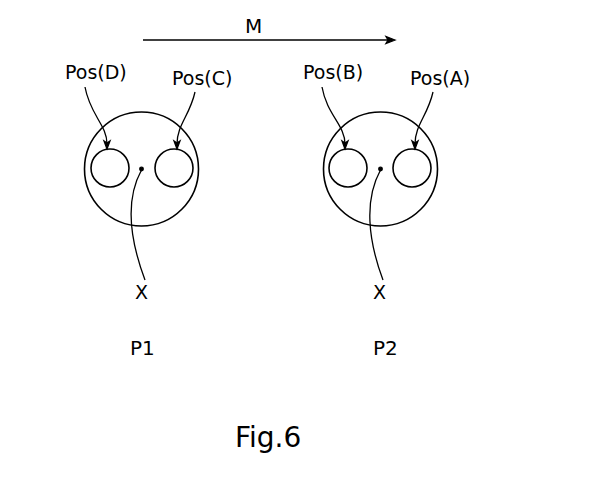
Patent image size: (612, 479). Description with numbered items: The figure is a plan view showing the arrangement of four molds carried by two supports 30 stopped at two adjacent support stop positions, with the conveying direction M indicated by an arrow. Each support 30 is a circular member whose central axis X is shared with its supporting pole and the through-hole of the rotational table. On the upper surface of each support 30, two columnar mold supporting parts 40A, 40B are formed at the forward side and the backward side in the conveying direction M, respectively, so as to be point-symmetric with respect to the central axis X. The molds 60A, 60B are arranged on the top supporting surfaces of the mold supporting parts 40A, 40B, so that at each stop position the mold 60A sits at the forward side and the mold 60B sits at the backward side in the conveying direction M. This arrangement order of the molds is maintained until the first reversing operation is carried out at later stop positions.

The support 30 is at (163, 225).
The mold 60A is at (333, 200).
The mold supporting part 40A is at (187, 172).
The mold 60B is at (202, 210).
The mold supporting part 40B is at (100, 170).